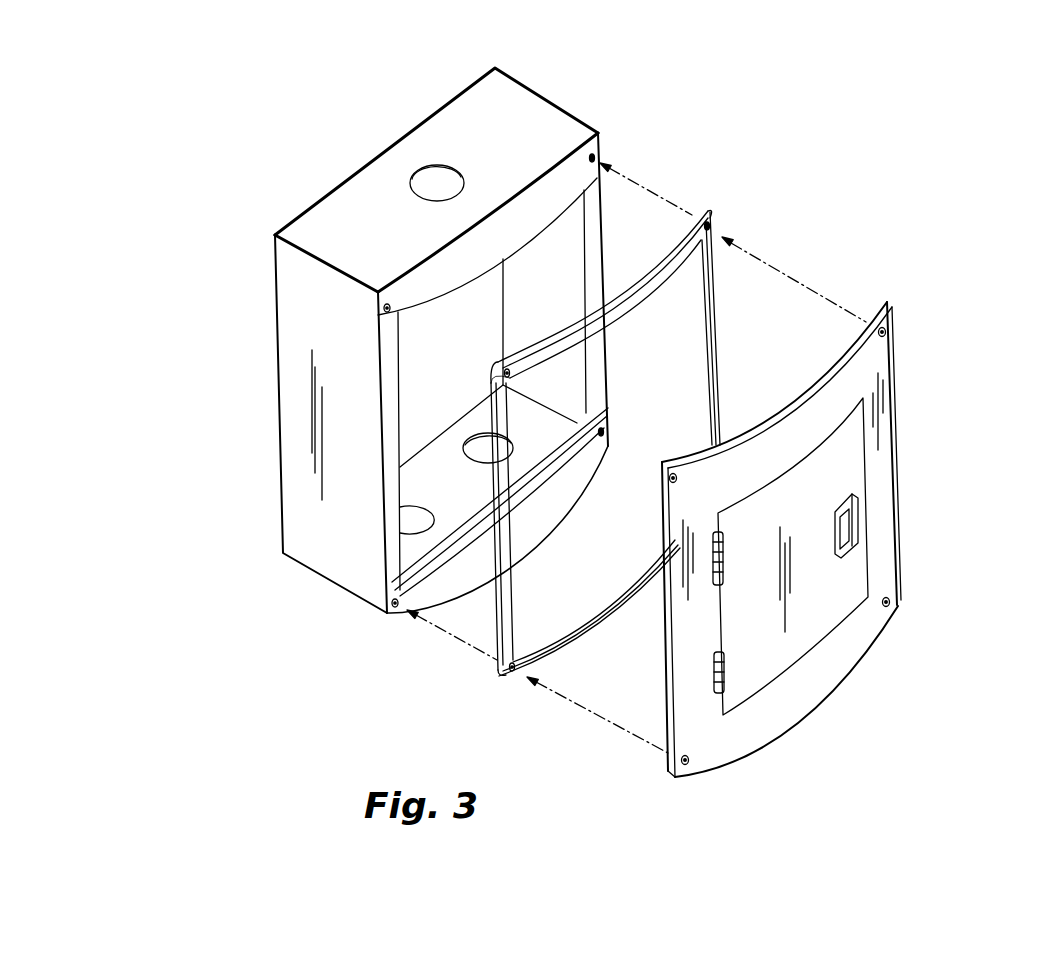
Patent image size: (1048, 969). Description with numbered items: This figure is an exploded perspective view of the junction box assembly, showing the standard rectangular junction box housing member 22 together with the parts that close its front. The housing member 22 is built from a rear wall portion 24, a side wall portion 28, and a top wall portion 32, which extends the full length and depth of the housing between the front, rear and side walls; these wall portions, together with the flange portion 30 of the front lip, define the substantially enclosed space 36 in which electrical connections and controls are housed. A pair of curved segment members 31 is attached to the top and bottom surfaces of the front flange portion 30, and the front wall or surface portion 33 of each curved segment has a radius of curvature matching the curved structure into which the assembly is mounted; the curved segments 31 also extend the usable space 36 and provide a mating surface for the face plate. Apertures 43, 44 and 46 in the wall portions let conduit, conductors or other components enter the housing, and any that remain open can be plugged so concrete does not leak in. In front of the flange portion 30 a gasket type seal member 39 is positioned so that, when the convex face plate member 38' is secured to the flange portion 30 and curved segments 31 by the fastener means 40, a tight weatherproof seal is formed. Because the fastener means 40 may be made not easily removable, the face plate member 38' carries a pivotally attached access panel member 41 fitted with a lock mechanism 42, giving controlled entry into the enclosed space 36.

The junction box housing member 22 is at (277, 397).
The rear wall portion 24 is at (293, 215).
The side wall portion 28 is at (585, 118).
The flange portion 30 is at (600, 203).
The curved segment members 31 is at (433, 312).
The top wall portion 32 is at (507, 113).
The front wall or surface portion 33 is at (517, 247).
The enclosed space 36 is at (417, 407).
The face plate member 38' is at (845, 539).
The gasket type seal member 39 is at (712, 273).
The fastener means 40 is at (887, 332).
The panel member 41 is at (820, 640).
The lock mechanism 42 is at (858, 512).
The aperture 43 is at (417, 528).
The aperture 44 is at (507, 442).
The aperture 46 is at (423, 167).